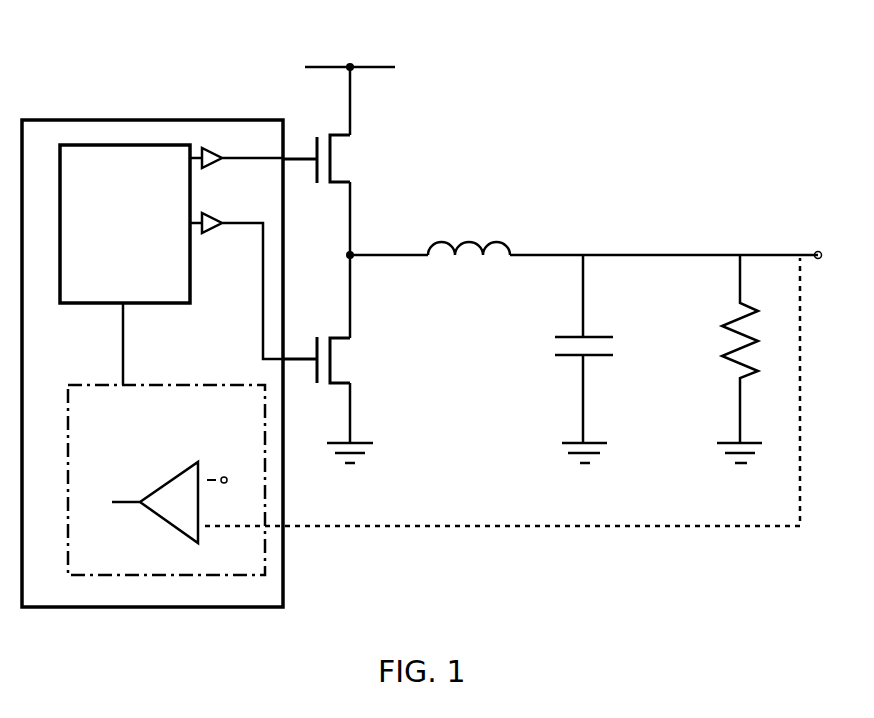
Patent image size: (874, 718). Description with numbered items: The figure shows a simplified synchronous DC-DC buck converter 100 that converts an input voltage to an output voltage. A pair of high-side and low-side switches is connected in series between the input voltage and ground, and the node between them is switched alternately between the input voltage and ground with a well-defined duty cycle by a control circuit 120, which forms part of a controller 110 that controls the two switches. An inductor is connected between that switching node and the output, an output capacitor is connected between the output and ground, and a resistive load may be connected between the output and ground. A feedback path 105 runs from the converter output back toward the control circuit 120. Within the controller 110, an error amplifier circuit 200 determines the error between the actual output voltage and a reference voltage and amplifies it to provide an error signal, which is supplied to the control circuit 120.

The converter 100 is at (647, 149).
The feedback path 105 is at (538, 528).
The controller 110 is at (143, 118).
The control circuit 120 is at (125, 224).
The error amplifier circuit 200 is at (166, 480).